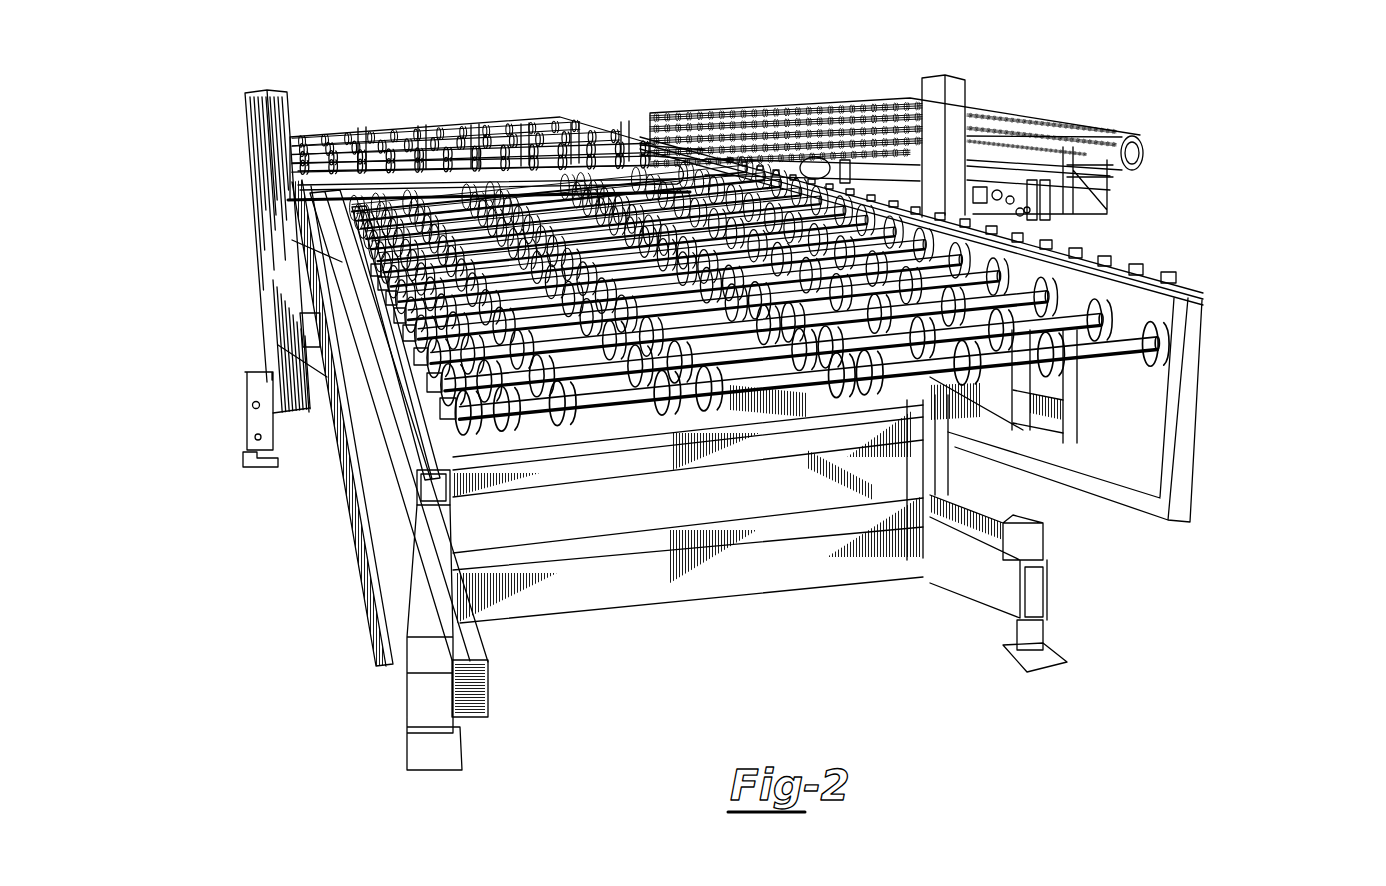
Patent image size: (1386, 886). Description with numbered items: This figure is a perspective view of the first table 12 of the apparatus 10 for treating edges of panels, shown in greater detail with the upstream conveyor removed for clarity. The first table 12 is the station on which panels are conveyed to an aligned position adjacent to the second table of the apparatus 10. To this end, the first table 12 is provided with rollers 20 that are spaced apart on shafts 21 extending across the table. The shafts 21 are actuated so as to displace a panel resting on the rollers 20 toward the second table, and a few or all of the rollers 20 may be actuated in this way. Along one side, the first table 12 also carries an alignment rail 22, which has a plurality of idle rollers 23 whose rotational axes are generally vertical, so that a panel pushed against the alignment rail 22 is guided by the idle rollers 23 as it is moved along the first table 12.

The apparatus 10 is at (719, 438).
The first table 12 is at (568, 502).
The rollers 20 is at (662, 350).
The shafts 21 is at (938, 345).
The alignment rail 22 is at (1122, 285).
The idle rollers 23 is at (1135, 352).